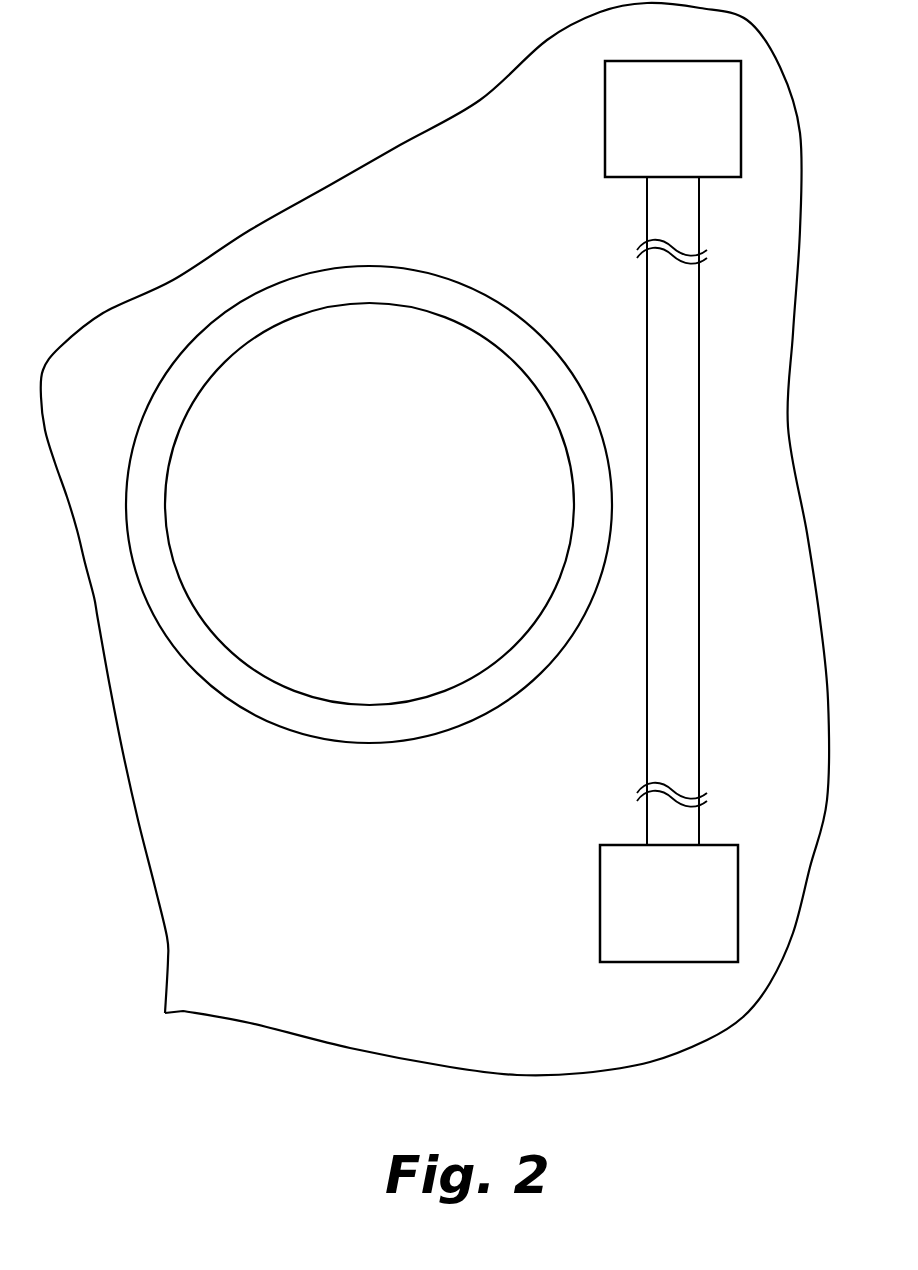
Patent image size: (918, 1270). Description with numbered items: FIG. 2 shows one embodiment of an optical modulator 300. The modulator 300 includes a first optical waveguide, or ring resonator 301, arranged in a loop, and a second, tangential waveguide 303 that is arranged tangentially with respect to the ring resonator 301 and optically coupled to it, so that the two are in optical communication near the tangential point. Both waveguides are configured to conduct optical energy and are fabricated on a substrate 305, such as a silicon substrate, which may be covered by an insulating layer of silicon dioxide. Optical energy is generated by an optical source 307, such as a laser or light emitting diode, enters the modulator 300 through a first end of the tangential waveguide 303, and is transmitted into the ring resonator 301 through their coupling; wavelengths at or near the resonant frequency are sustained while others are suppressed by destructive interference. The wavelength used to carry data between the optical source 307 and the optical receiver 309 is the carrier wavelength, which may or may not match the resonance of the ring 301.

The optical modulator 300 is at (143, 183).
The ring resonator 301 is at (159, 433).
The tangential waveguide 303 is at (677, 285).
The substrate 305 is at (502, 170).
The optical source 307 is at (690, 957).
The optical receiver 309 is at (690, 172).